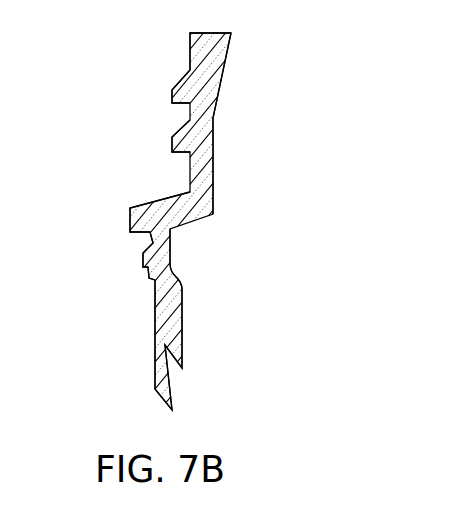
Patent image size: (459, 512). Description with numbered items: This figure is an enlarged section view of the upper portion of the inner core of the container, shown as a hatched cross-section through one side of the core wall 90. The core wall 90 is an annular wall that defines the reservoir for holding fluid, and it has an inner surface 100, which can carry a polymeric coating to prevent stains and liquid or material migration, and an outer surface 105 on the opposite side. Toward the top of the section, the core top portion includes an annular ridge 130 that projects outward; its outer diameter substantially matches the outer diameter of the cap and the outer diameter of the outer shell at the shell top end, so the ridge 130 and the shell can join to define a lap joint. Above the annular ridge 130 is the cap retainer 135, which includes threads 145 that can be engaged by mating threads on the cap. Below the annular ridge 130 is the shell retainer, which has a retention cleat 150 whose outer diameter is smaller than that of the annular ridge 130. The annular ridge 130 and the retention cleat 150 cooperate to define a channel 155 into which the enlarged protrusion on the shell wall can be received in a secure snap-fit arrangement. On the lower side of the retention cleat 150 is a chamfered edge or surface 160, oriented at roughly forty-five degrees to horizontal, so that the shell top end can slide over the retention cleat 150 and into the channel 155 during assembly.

The core wall 90 is at (213, 127).
The inner surface 100 is at (213, 177).
The outer surface 105 is at (156, 335).
The annular ridge 130 is at (142, 208).
The cap retainer 135 is at (190, 57).
The threads 145 is at (176, 97).
The retention cleat 150 is at (143, 263).
The channel 155 is at (147, 252).
The chamfered edge or surface 160 is at (147, 277).